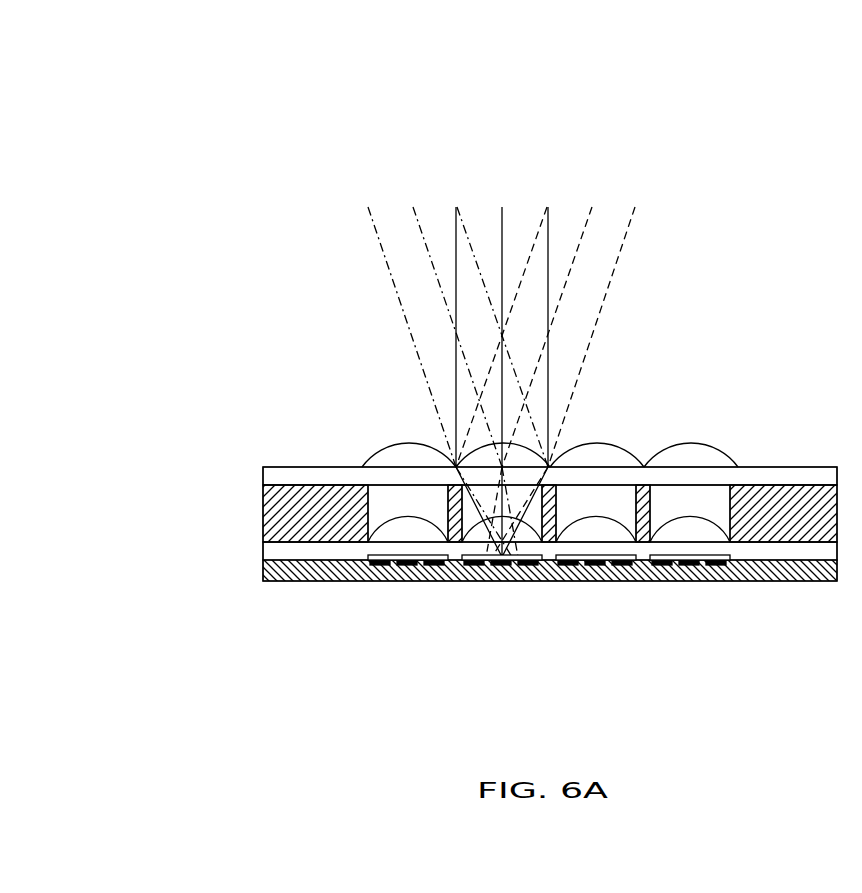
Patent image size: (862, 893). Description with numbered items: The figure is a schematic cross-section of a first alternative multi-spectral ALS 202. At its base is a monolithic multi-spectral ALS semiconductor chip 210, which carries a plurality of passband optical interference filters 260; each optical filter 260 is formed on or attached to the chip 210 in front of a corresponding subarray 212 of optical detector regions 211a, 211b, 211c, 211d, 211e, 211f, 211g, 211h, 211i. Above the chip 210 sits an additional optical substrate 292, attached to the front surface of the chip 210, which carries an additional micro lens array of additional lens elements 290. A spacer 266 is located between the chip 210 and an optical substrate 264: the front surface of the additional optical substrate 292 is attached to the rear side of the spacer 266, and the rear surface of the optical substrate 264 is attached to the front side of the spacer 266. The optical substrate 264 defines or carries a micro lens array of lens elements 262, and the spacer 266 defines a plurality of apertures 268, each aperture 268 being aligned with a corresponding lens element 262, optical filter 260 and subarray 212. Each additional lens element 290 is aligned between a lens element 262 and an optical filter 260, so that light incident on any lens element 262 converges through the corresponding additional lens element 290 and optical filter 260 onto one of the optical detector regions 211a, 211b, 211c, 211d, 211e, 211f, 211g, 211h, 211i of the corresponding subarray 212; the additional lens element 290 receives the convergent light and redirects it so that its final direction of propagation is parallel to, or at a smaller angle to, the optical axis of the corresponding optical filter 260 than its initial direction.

The first alternative multi-spectral ALS 202 is at (233, 433).
The lens element 262 is at (392, 443).
The aperture 268 is at (388, 500).
The additional lens element 290 is at (683, 517).
The optical substrate 264 is at (263, 476).
The spacer 266 is at (263, 510).
The additional optical substrate 292 is at (263, 550).
The monolithic multi-spectral ALS semiconductor chip 210 is at (263, 571).
The passband optical interference filter 260 is at (366, 581).
The subarray of optical detector regions 212 is at (165, 640).
The optical detector region 211a is at (387, 581).
The optical detector region 211b is at (408, 581).
The optical detector region 211c is at (433, 581).
The optical detector region 211d is at (356, 615).
The optical detector region 211e is at (380, 632).
The optical detector region 211f is at (419, 649).
The optical detector region 211g is at (435, 615).
The optical detector region 211h is at (460, 632).
The optical detector region 211i is at (495, 649).